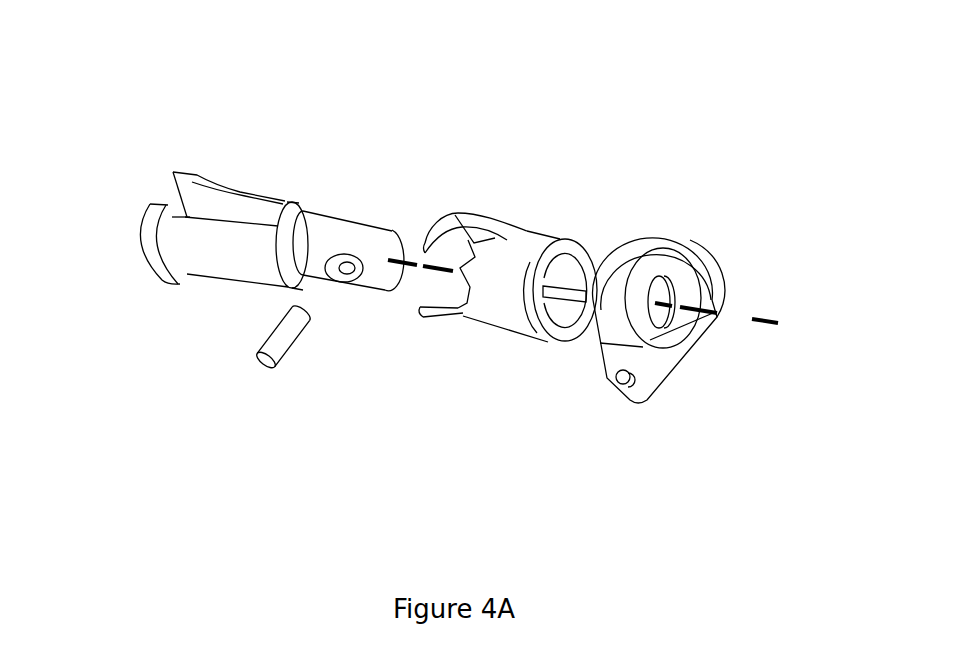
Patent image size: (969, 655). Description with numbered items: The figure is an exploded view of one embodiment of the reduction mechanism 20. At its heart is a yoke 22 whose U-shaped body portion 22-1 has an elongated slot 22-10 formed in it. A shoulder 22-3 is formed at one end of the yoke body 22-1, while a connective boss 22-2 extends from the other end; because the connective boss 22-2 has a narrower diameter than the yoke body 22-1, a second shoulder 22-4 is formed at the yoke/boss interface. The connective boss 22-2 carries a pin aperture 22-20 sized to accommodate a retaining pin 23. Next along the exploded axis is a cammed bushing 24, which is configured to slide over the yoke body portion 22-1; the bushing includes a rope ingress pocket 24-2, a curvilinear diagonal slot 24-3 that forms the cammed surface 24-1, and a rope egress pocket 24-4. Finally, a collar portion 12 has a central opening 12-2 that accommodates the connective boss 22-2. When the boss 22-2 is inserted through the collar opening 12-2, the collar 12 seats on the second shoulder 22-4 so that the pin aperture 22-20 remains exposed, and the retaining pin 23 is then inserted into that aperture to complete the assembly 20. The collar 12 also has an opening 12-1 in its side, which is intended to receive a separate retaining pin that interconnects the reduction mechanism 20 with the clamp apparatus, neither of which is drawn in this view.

The reduction mechanism 20 is at (113, 96).
The yoke 22 is at (326, 84).
The U-shaped body portion 22-1 is at (230, 270).
The connective boss 22-2 is at (349, 228).
The shoulder 22-3 is at (152, 252).
The second shoulder 22-4 is at (308, 207).
The elongated slot 22-10 is at (248, 207).
The pin aperture 22-20 is at (347, 273).
The retaining pin 23 is at (288, 338).
The cammed bushing 24 is at (486, 171).
The cammed surface 24-1 is at (527, 243).
The rope ingress pocket 24-2 is at (577, 290).
The curvilinear diagonal slot 24-3 is at (510, 228).
The rope egress pocket 24-4 is at (470, 302).
The collar portion 12 is at (662, 434).
The opening 12-1 is at (618, 381).
The central opening 12-2 is at (655, 328).